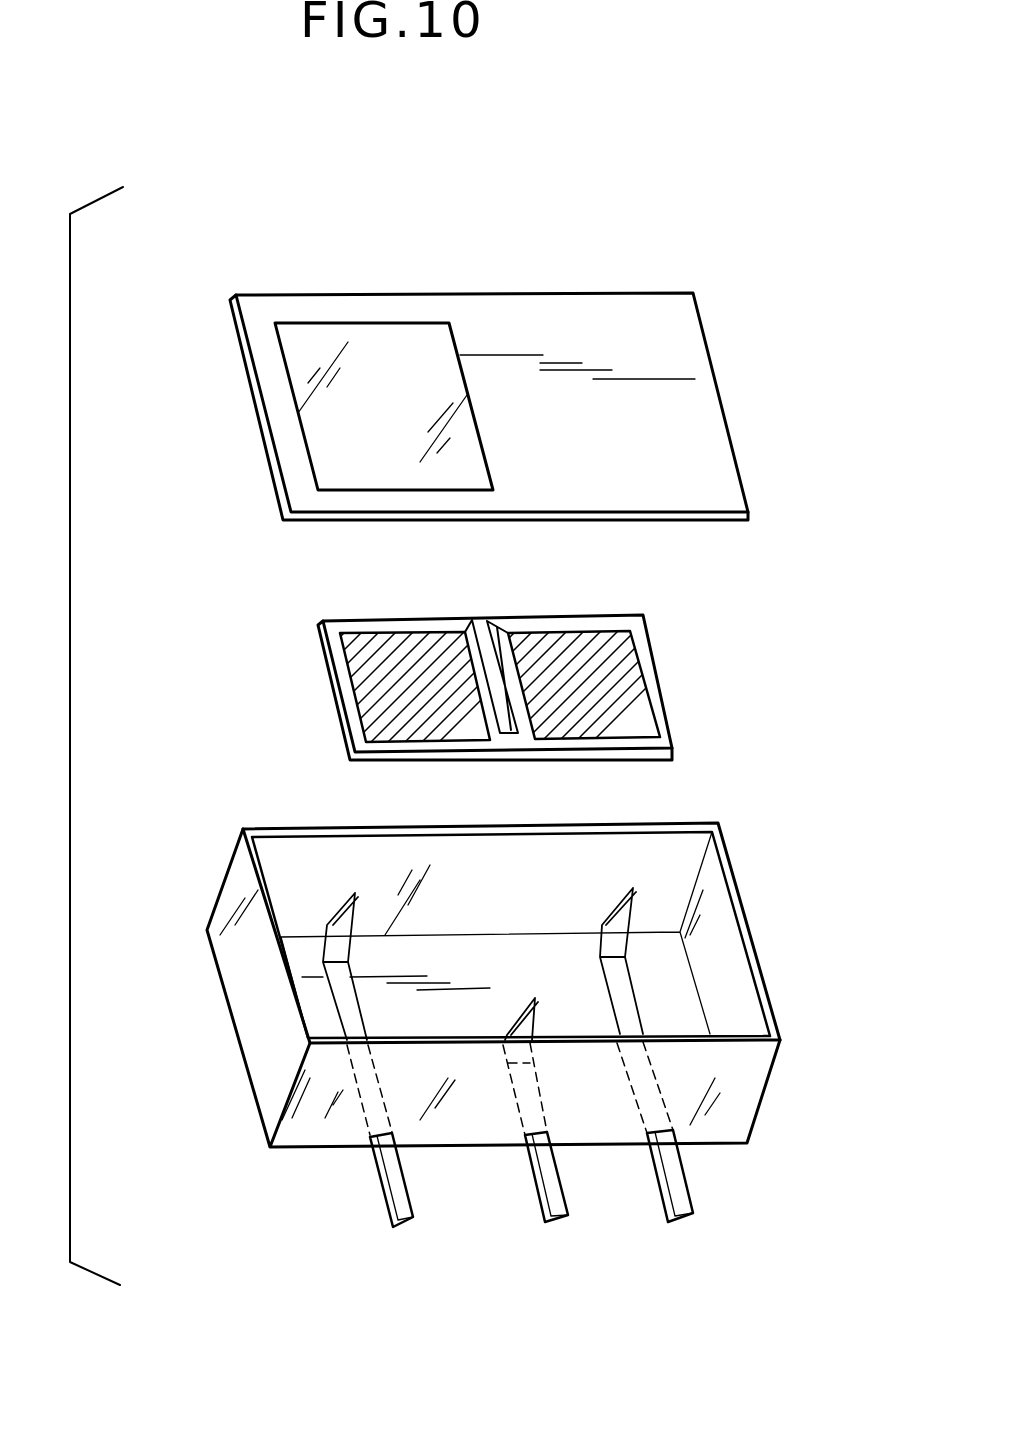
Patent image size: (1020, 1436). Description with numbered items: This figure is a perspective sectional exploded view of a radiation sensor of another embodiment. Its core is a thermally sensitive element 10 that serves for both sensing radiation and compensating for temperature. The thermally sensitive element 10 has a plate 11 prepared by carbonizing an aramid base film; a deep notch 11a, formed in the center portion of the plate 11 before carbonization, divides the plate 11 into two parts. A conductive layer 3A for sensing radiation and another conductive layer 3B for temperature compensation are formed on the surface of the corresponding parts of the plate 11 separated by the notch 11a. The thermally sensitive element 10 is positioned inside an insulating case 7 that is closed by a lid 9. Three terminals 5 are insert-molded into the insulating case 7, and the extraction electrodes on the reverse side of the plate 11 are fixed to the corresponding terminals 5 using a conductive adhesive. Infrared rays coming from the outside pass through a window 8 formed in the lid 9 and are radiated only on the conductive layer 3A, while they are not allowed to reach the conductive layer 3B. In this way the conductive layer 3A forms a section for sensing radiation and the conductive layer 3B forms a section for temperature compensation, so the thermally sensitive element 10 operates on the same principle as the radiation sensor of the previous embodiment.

The terminals 5 is at (397, 1182).
The insulating case 7 is at (745, 1090).
The window 8 is at (338, 427).
The lid 9 is at (710, 418).
The thermally sensitive element 10 is at (308, 668).
The plate 11 is at (663, 728).
The notch 11a is at (482, 623).
The conductive layer for sensing radiation 3A is at (352, 712).
The conductive layer for temperature compensation 3B is at (633, 682).